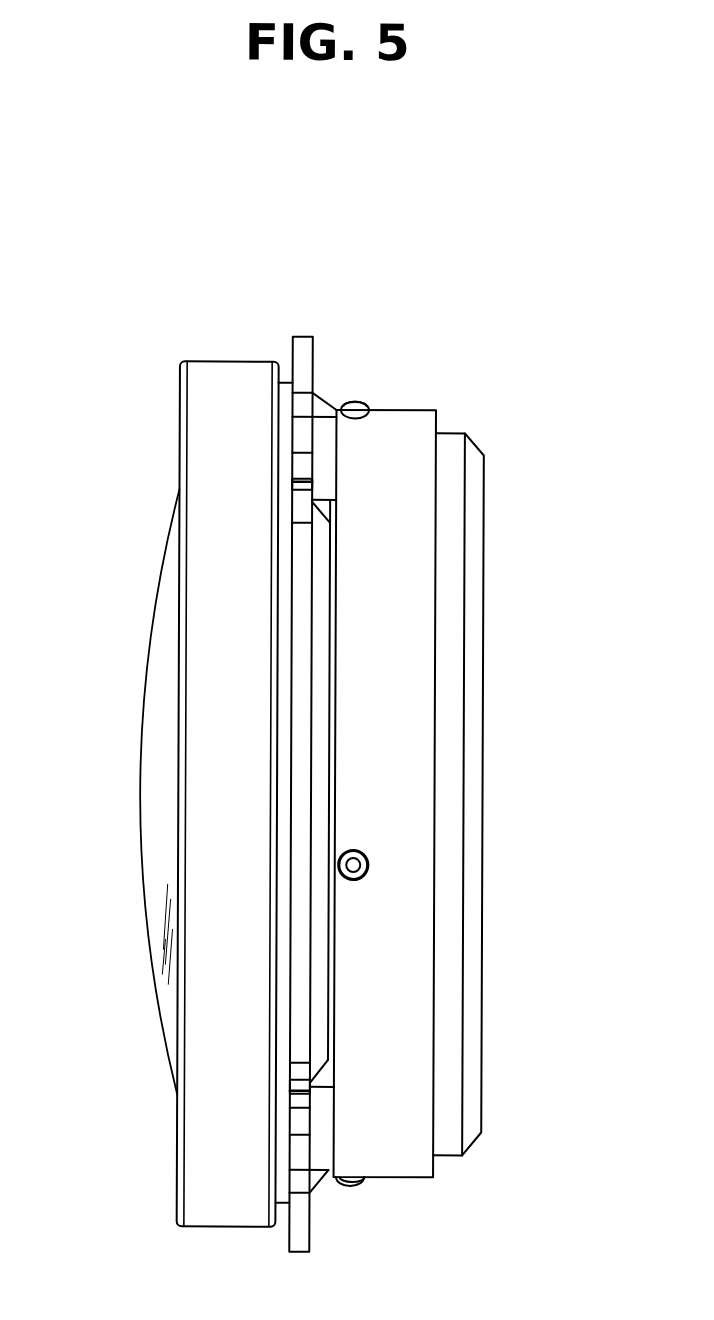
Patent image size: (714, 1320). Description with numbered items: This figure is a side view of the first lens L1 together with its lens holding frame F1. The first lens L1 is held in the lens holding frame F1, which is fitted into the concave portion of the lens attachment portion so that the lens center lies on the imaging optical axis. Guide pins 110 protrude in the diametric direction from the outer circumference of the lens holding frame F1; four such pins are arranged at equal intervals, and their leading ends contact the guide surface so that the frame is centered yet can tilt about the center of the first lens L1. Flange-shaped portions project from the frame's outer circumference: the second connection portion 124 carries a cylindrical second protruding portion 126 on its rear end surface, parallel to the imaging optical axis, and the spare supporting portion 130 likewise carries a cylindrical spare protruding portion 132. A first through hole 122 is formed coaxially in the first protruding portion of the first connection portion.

The guide pin 110 is at (356, 402).
The first through hole 122 is at (303, 345).
The second connection portion 124 is at (292, 1082).
The second protruding portion 126 is at (357, 1131).
The spare supporting portion 130 is at (292, 488).
The spare protruding portion 132 is at (337, 460).
The lens holding frame F1 is at (413, 722).
The first lens L1 is at (148, 800).